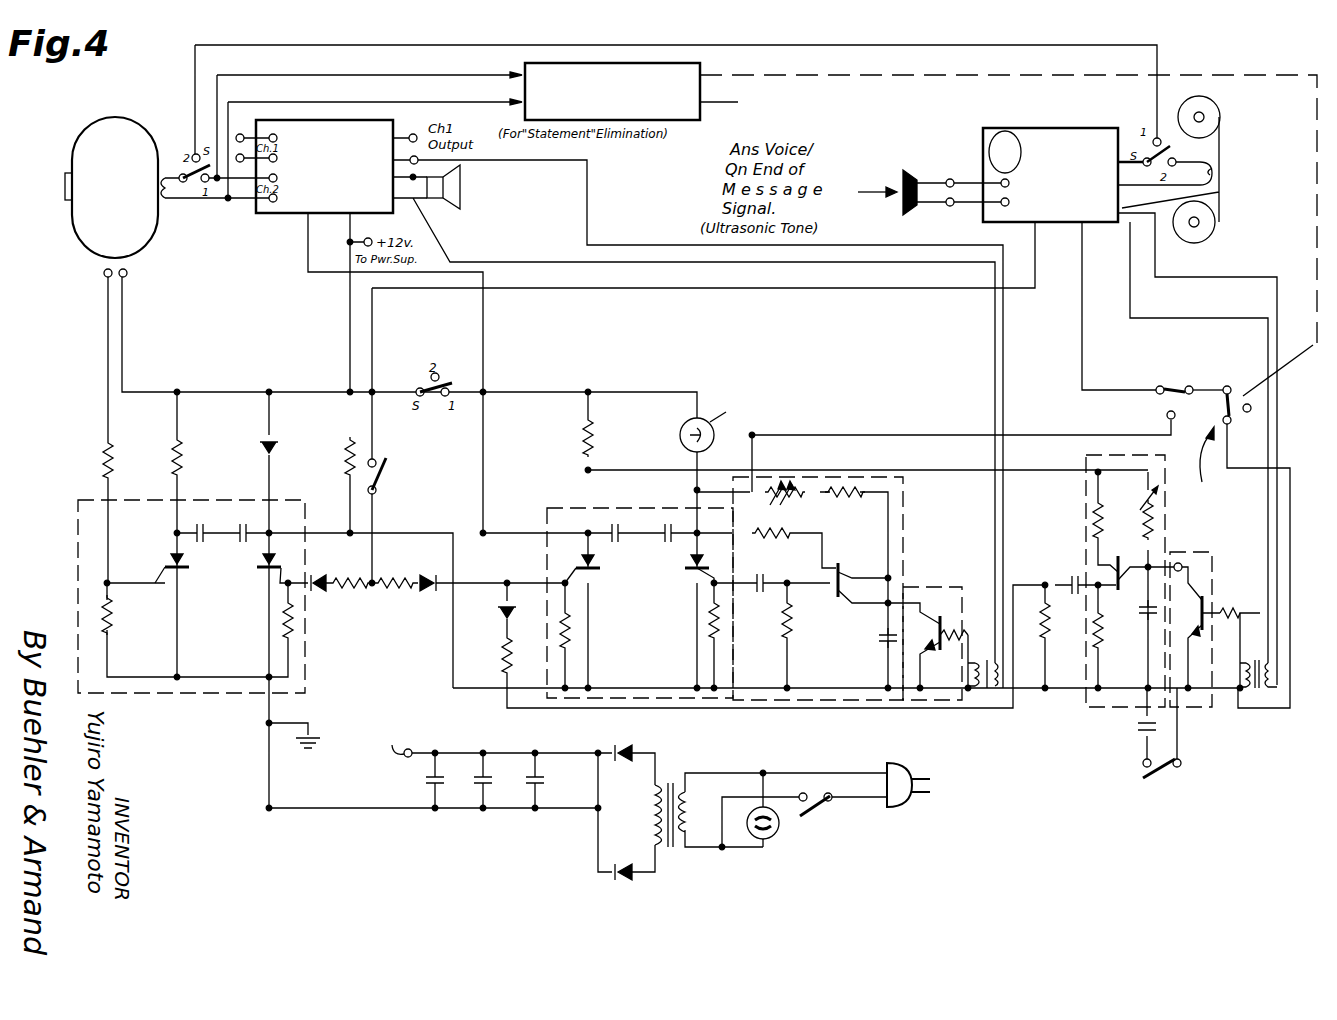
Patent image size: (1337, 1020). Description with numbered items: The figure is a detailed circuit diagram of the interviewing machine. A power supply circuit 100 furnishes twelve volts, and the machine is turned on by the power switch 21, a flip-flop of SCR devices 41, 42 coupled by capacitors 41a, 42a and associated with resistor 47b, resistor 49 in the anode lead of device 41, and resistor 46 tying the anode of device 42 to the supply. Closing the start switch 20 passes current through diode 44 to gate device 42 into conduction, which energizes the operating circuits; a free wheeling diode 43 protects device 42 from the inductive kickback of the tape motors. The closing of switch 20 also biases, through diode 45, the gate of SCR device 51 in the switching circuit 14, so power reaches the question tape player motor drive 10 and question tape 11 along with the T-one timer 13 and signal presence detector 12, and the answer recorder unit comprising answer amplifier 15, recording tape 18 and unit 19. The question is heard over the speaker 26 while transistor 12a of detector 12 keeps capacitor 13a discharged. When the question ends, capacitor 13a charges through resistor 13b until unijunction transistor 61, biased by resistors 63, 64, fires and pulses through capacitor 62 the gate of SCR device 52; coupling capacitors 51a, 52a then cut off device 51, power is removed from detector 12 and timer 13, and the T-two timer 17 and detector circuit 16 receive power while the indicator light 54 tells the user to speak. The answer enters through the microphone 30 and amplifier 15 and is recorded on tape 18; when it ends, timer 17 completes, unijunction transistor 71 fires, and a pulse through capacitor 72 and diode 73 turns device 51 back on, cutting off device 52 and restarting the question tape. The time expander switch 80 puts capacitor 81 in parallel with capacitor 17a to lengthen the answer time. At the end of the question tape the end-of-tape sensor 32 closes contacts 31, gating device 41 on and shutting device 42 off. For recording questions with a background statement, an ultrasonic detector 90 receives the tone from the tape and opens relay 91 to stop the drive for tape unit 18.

The question tape player motor drive 10 is at (332, 203).
The question tape 11 is at (163, 106).
The signal presence detector 12 is at (938, 587).
The transistor 12a is at (933, 629).
The T1 timer 13 is at (906, 504).
The capacitor 13a is at (878, 638).
The resistor 13b is at (848, 495).
The switching circuit 14 is at (547, 514).
The answer amplifier 15 is at (1050, 161).
The detector circuit 16 is at (1212, 568).
The T2 timer 17 is at (1167, 527).
The capacitor 17a is at (1148, 624).
The recording tape 18 is at (1255, 144).
The answer tape recorder unit 19 is at (1005, 152).
The start switch 20 is at (420, 470).
The power switch 21 is at (205, 702).
The speaker 26 is at (465, 180).
The microphone 30 is at (915, 182).
The end-of-tape switch 31 is at (128, 270).
The end-of-tape sensor 32 is at (62, 195).
The SCR device 41 is at (189, 568).
The coupling capacitor 41a is at (226, 490).
The SCR device 42 is at (258, 568).
The coupling capacitor 42a is at (243, 524).
The free wheeling diode 43 is at (266, 440).
The diode 44 is at (328, 590).
The diode 45 is at (422, 593).
The resistor 46 is at (346, 460).
The resistor 47b is at (110, 610).
The resistor 49 is at (174, 458).
The SCR device 51 is at (600, 568).
The coupling capacitor 51a is at (615, 524).
The SCR device 52 is at (686, 568).
The coupling capacitor 52a is at (668, 524).
The indicator light 54 is at (680, 442).
The unijunction transistor 61 is at (868, 560).
The capacitor 62 is at (778, 565).
The resistor 63 is at (760, 534).
The resistor 64 is at (785, 642).
The unijunction transistor 71 is at (1116, 560).
The capacitor 72 is at (1072, 590).
The diode 73 is at (500, 600).
The time expander switch 80 is at (1243, 850).
The capacitor 81 is at (1138, 735).
The ultrasonic detector 90 is at (645, 91).
The relay 91 is at (1260, 378).
The power supply circuit 100 is at (548, 846).